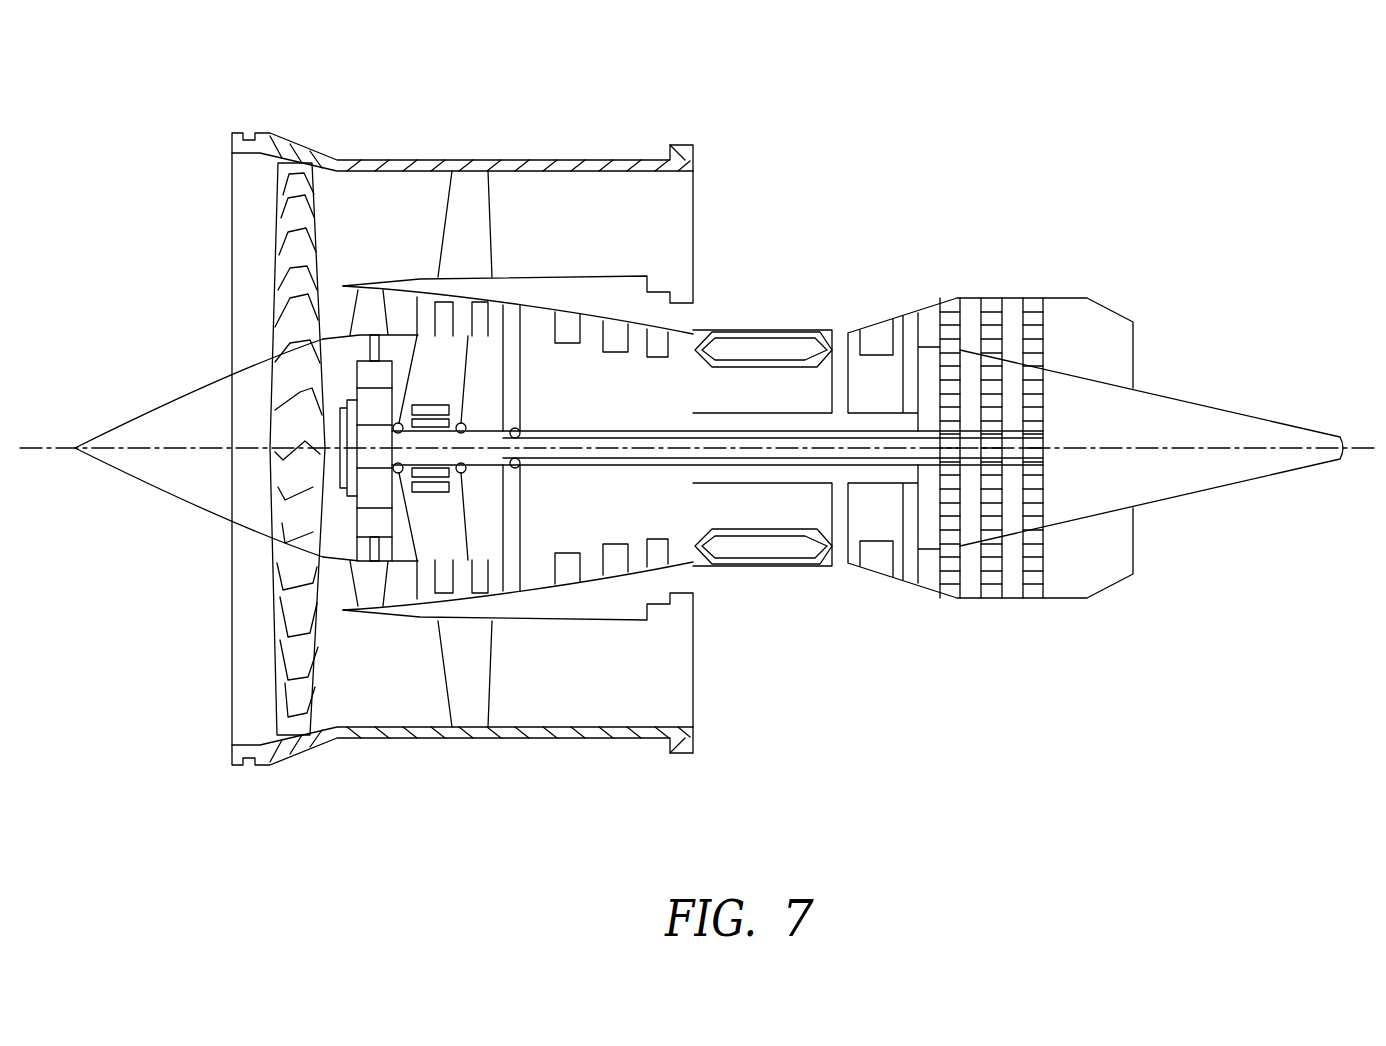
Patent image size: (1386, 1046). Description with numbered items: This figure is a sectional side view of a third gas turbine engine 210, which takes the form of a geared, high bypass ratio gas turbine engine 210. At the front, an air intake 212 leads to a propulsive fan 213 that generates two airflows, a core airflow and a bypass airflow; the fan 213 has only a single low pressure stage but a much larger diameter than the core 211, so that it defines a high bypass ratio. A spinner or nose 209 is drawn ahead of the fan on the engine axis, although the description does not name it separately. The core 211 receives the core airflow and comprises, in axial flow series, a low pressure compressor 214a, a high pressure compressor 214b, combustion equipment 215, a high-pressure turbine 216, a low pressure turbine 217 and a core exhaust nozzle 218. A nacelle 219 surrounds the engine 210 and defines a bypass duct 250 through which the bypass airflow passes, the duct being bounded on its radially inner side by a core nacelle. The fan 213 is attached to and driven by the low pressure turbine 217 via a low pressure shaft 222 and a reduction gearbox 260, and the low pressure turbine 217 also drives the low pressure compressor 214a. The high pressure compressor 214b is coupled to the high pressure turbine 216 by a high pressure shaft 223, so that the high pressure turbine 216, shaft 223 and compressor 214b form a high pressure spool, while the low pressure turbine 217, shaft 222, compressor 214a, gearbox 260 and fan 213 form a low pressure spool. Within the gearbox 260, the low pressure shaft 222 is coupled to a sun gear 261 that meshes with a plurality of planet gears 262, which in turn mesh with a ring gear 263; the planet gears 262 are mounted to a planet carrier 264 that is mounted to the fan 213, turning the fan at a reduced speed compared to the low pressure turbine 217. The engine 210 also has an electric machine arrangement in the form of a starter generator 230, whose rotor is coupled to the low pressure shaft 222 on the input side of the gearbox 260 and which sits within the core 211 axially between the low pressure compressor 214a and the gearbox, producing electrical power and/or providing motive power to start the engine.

The nose cone / spinner 209 is at (38, 442).
The gas turbine engine 210 is at (1240, 180).
The core 211 is at (640, 582).
The air intake 212 is at (198, 208).
The propulsive fan 213 is at (296, 650).
The low pressure compressor 214a is at (442, 380).
The high pressure compressor 214b is at (683, 378).
The combustion equipment 215 is at (790, 552).
The high-pressure turbine 216 is at (910, 328).
The low pressure turbine 217 is at (988, 313).
The core exhaust nozzle 218 is at (1125, 352).
The nacelle 219 is at (532, 158).
The low pressure shaft 222 is at (553, 470).
The high pressure shaft 223 is at (795, 410).
The starter generator 230 is at (500, 330).
The bypass duct 250 is at (672, 198).
The reduction gearbox 260 is at (328, 432).
The sun gear 261 is at (343, 452).
The planet gears 262 is at (343, 487).
The ring gear 263 is at (372, 523).
The planet carrier 264 is at (343, 407).